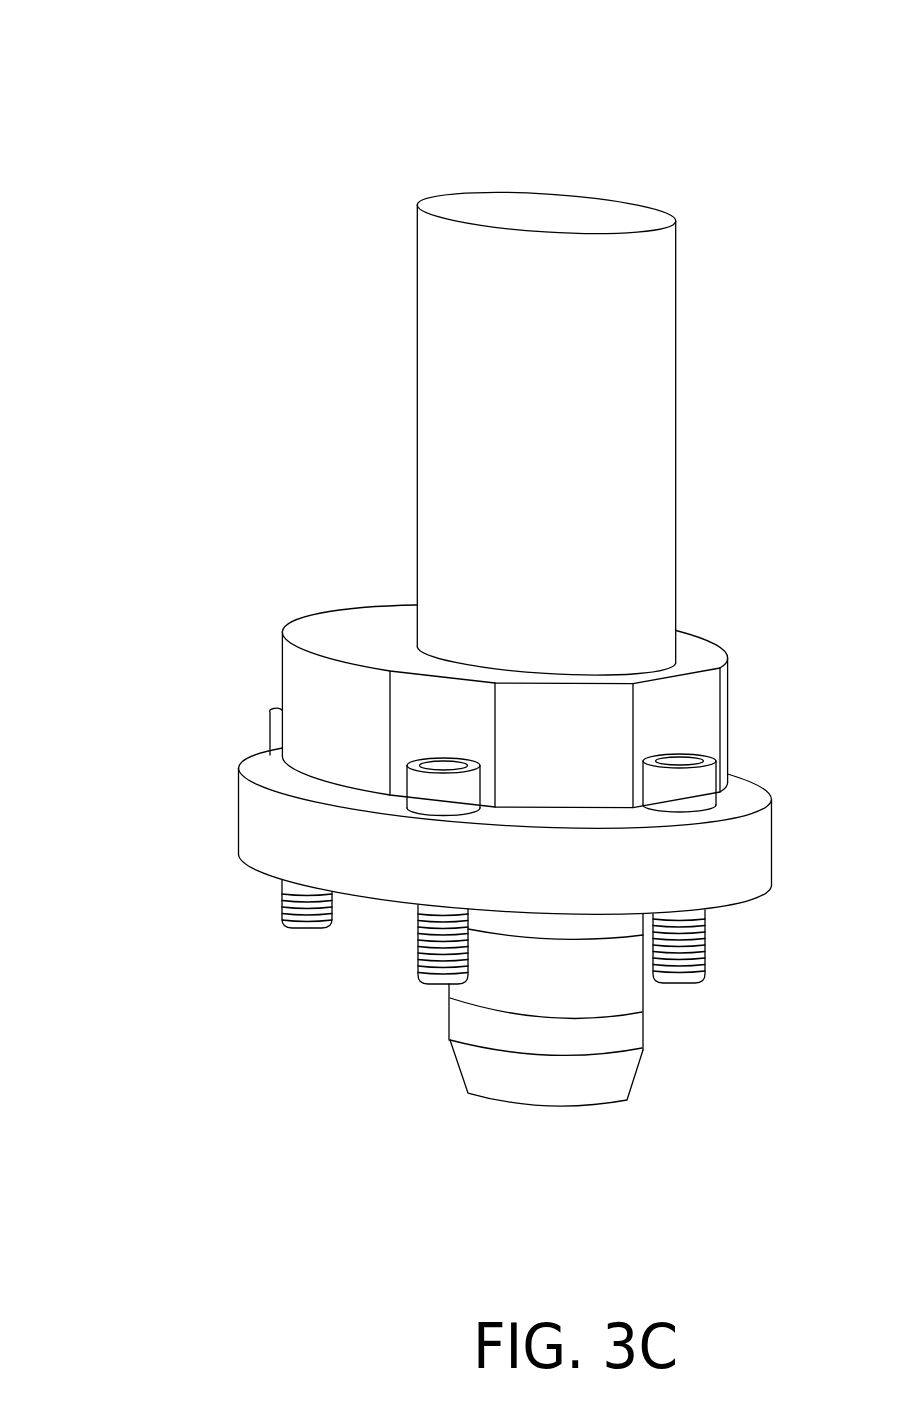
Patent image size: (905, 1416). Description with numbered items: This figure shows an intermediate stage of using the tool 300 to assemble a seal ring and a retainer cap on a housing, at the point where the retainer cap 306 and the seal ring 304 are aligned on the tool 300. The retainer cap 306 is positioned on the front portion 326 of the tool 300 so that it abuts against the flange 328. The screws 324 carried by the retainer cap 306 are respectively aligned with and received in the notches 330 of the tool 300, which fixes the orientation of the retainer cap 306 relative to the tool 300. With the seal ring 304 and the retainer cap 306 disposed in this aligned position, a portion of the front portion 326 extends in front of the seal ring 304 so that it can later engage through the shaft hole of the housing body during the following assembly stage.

The tool 300 is at (639, 120).
The flange 328 is at (565, 735).
The notches 330 is at (268, 662).
The retainer cap 306 is at (240, 806).
The screws 324 is at (308, 928).
The seal ring 304 is at (542, 923).
The front portion 326 is at (542, 1073).